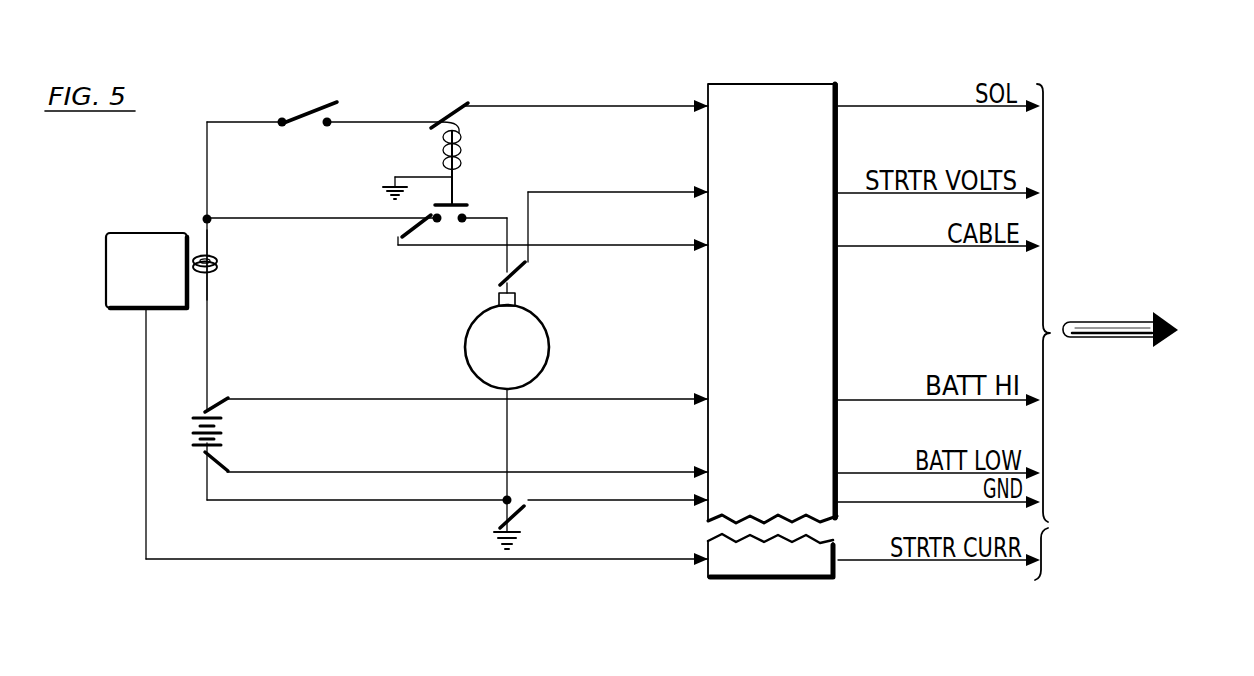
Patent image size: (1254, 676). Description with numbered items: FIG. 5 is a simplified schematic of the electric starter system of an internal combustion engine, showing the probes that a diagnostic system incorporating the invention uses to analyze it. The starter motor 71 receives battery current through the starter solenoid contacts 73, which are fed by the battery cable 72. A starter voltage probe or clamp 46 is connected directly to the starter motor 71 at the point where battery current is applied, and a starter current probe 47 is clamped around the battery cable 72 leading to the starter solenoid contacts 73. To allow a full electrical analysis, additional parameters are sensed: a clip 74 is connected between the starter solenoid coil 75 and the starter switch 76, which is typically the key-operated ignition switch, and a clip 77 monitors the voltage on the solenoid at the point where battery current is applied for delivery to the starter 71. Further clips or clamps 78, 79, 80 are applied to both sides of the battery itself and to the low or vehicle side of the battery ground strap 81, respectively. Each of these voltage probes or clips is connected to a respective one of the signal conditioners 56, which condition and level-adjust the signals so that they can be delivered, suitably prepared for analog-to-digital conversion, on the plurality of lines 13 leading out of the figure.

The plurality of lines 13 is at (1124, 306).
The starter voltage probe 46 is at (520, 271).
The starter current probe 47 is at (146, 233).
The signal conditioners 56 is at (790, 225).
The starter motor 71 is at (466, 332).
The battery cable 72 is at (210, 239).
The starter solenoid contacts 73 is at (472, 209).
The clip 74 is at (446, 117).
The starter solenoid coil 75 is at (462, 143).
The starter switch 76 is at (306, 111).
The clip 77 is at (404, 236).
The clip 78 is at (218, 401).
The clip 79 is at (226, 462).
The clip 80 is at (517, 512).
The battery ground strap 81 is at (207, 483).